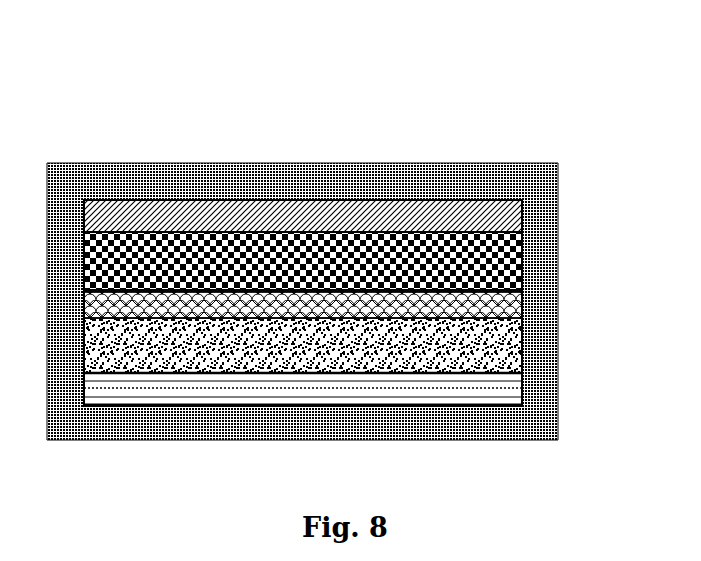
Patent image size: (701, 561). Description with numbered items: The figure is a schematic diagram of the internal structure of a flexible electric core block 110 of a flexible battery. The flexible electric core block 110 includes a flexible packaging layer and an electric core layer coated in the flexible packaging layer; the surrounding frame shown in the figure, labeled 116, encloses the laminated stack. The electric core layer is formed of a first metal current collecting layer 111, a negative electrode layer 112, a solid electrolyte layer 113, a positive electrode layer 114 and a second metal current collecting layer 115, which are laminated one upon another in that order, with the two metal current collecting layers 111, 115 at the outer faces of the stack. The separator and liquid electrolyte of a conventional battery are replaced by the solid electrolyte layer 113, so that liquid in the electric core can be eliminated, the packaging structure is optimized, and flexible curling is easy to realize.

The flexible electric core block 110 is at (327, 56).
The first metal current collecting layer 111 is at (522, 392).
The negative electrode layer 112 is at (522, 350).
The solid electrolyte layer 113 is at (522, 304).
The positive electrode layer 114 is at (522, 253).
The second metal current collecting layer 115 is at (522, 217).
The encapsulation frame 116 is at (503, 172).